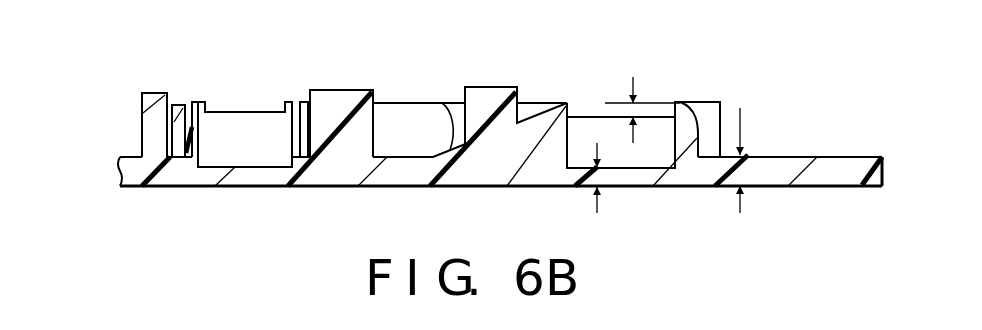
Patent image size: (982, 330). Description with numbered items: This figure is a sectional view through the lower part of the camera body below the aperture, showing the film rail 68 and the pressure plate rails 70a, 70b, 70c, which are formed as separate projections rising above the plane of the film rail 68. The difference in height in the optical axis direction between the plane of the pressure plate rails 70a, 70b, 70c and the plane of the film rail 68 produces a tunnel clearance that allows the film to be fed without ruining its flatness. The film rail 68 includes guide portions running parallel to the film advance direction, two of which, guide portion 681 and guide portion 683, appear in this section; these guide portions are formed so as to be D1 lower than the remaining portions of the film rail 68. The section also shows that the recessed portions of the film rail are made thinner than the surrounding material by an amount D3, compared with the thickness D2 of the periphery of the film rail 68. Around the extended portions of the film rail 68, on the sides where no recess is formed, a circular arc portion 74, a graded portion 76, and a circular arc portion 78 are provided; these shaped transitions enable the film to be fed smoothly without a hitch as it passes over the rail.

The pressure plate rail 70a is at (150, 92).
The circular arc portion 74 is at (178, 120).
The guide portion 681 is at (243, 111).
The pressure plate rail 70b is at (330, 89).
The film rail 68 is at (405, 102).
The graded portion 76 is at (442, 102).
The pressure plate rail 70c is at (503, 86).
The guide portion 683 is at (588, 116).
The circular arc portion 78 is at (692, 107).
The height difference D1 is at (642, 93).
The thickness of the periphery of the film rail D2 is at (740, 182).
The thickness reduction D3 is at (603, 197).